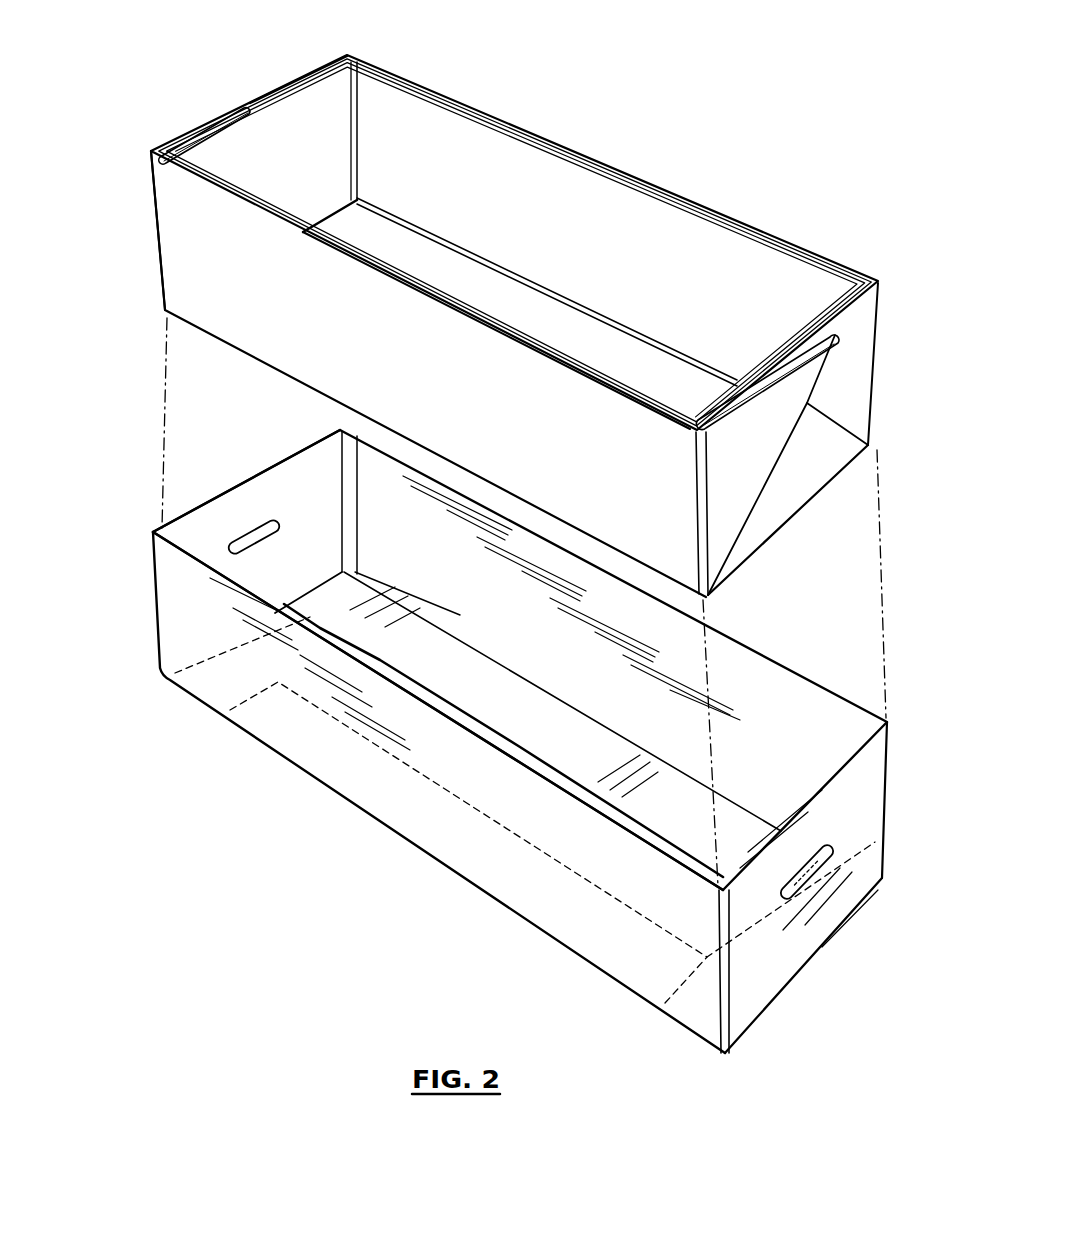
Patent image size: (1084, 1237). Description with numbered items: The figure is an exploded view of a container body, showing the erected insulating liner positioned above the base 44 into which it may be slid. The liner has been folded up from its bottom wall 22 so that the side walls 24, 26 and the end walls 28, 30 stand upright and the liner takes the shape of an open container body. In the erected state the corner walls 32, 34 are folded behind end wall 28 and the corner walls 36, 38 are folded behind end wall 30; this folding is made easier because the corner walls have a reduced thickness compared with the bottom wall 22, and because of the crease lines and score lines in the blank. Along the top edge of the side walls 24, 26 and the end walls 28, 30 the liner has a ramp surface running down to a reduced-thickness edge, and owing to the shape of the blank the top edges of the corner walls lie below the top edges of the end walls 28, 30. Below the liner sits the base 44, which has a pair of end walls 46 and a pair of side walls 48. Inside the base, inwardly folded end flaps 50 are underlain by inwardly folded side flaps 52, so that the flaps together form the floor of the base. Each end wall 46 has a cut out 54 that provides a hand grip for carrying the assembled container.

The bottom wall 22 is at (525, 320).
The side wall 24 is at (662, 188).
The side wall 26 is at (308, 342).
The end wall 28 is at (777, 350).
The end wall 30 is at (298, 170).
The corner wall 32 is at (730, 485).
The corner wall 34 is at (858, 352).
The corner wall 36 is at (187, 130).
The corner wall 38 is at (313, 72).
The base 44 is at (132, 503).
The end wall 46 is at (258, 468).
The side wall 48 is at (303, 743).
The end flap 50 is at (358, 613).
The side flap 52 is at (494, 691).
The cut out 54 is at (822, 878).